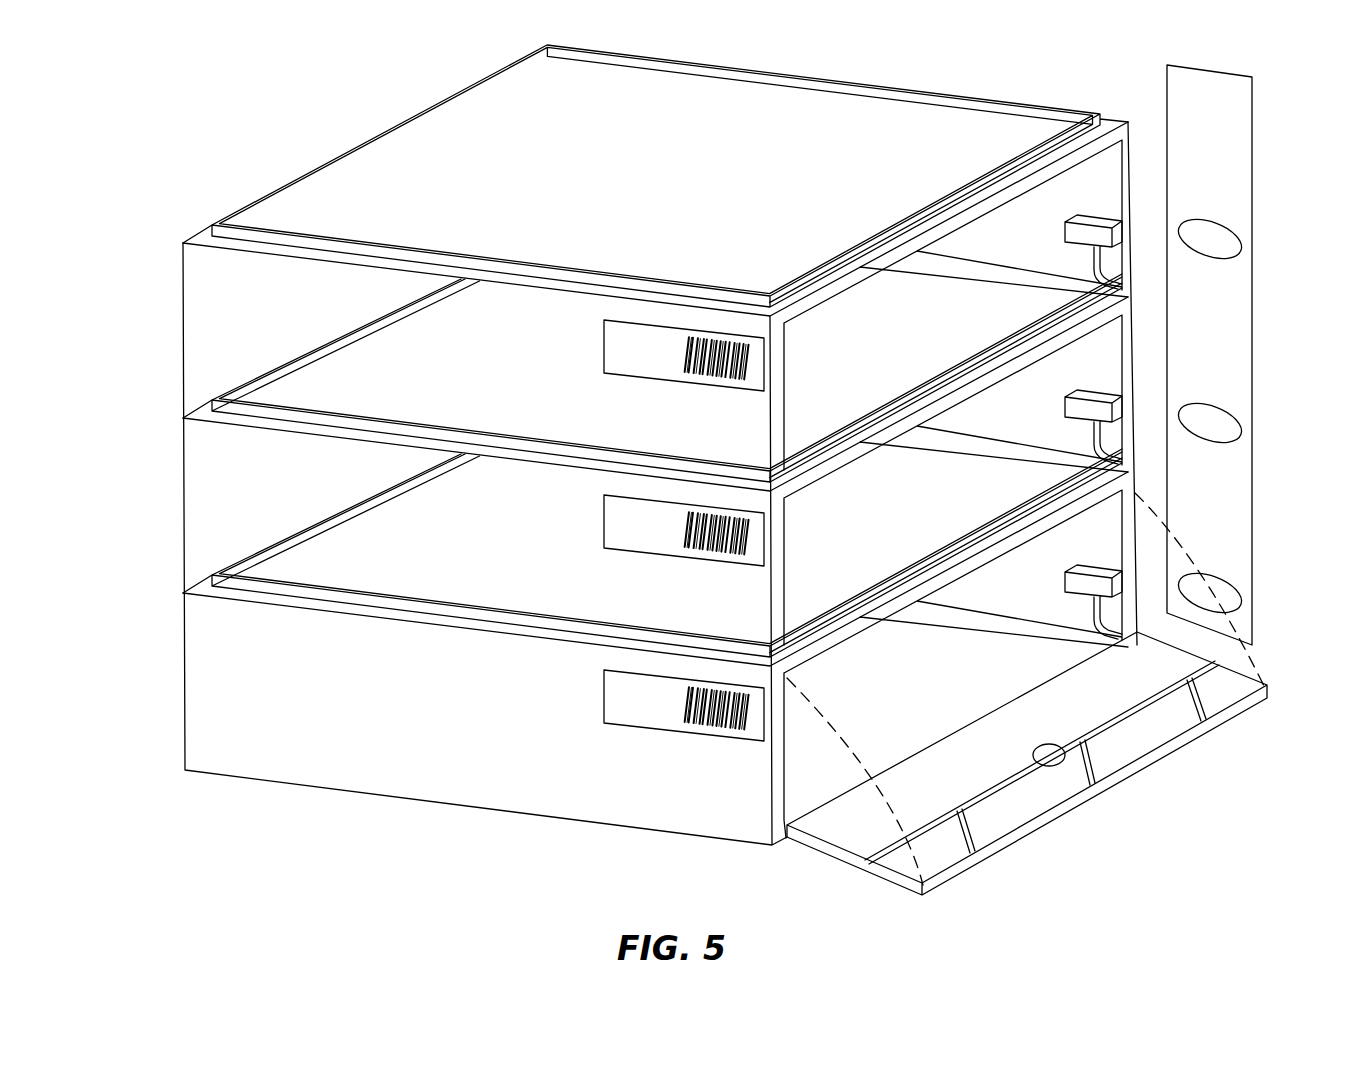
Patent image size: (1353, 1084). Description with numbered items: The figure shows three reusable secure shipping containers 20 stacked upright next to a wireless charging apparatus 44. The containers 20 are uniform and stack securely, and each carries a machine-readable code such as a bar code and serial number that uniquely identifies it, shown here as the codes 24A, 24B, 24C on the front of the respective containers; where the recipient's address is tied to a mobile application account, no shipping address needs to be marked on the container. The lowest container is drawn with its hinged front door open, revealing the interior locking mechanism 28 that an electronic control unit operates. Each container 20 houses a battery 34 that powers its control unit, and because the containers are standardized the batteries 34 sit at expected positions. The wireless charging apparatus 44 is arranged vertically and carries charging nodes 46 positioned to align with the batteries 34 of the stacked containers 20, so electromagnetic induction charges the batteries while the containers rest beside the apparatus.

The secure shipping container 20 is at (160, 307).
The machine-readable code 24A is at (687, 383).
The machine-readable code 24B is at (684, 563).
The machine-readable code 24C is at (684, 738).
The interior locking mechanism 28 is at (1050, 745).
The battery 34 is at (1106, 242).
The wireless charging apparatus 44 is at (1250, 152).
The charging node 46 is at (1225, 236).